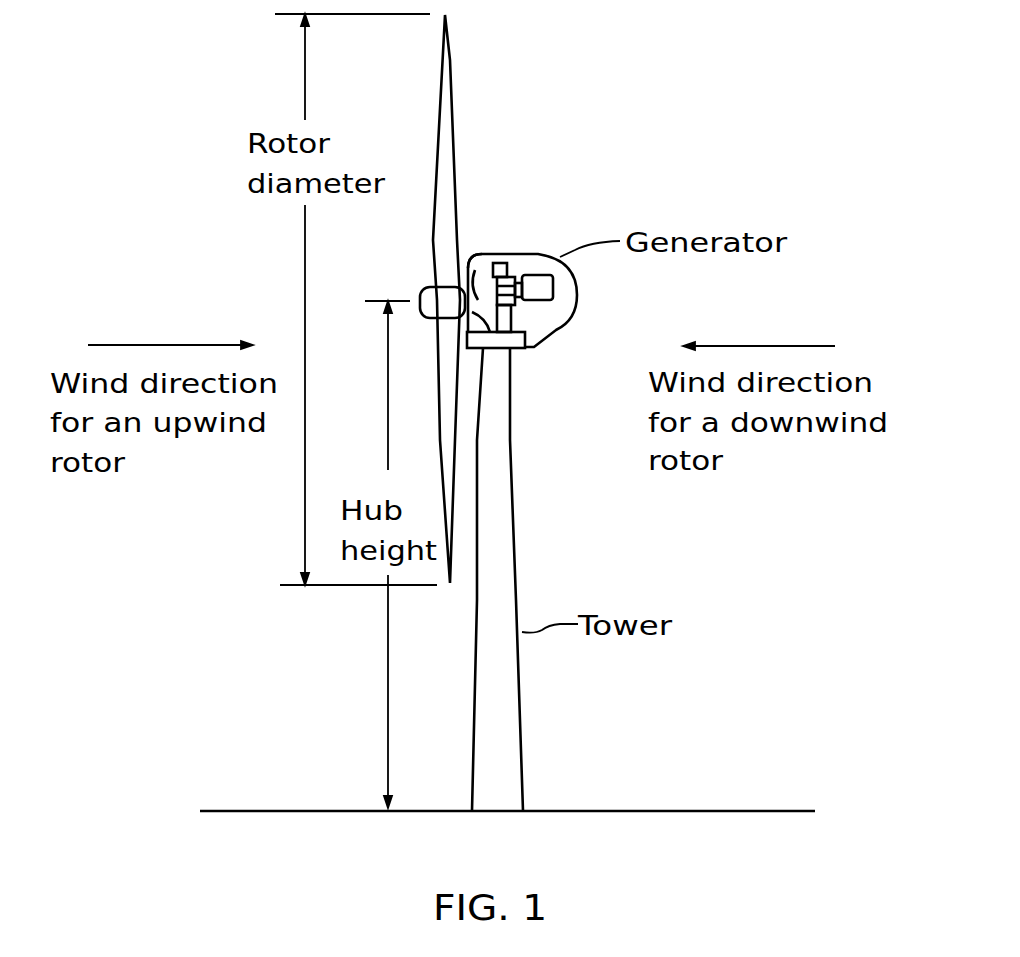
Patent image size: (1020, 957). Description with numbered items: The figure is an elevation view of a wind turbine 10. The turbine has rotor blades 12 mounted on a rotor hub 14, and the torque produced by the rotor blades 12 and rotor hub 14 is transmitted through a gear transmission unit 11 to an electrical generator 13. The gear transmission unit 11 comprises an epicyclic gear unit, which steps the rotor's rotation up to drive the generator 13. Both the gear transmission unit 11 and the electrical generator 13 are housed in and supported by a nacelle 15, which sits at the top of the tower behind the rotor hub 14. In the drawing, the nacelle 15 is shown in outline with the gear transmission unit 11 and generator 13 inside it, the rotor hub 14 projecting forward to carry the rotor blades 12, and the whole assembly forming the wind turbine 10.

The wind turbine 10 is at (652, 129).
The gear transmission unit 11 is at (480, 257).
The rotor blades 12 is at (452, 120).
The electrical generator 13 is at (538, 275).
The rotor hub 14 is at (443, 300).
The nacelle 15 is at (577, 292).